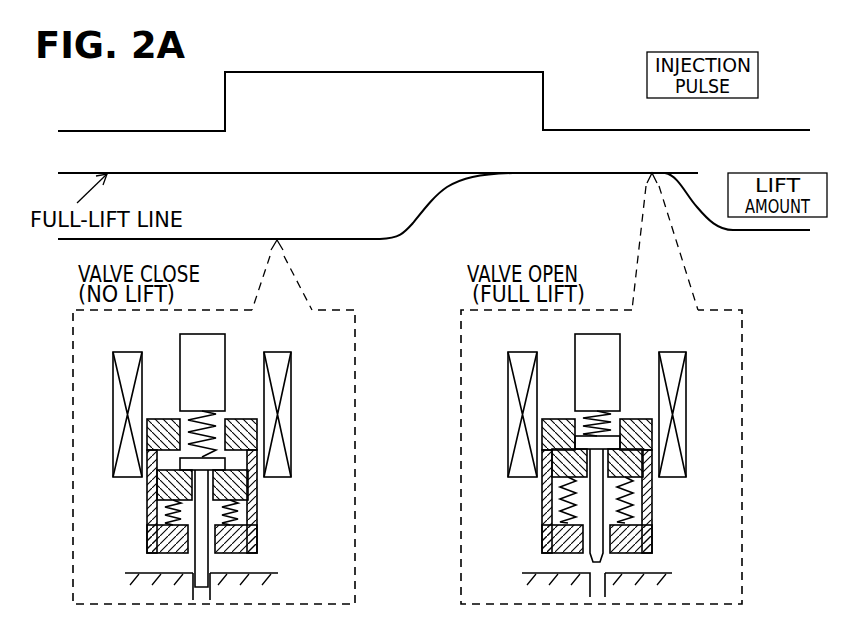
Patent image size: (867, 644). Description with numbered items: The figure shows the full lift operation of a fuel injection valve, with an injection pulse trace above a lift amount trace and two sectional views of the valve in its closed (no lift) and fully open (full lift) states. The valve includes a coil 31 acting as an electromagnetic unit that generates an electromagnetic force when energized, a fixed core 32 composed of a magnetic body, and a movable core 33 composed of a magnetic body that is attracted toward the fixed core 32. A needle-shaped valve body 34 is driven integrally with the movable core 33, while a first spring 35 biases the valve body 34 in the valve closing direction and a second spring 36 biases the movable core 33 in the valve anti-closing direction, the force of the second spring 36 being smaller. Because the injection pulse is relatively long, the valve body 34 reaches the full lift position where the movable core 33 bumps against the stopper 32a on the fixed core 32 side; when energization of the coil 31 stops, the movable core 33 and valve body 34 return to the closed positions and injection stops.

The coil 31 is at (291, 415).
The fixed core 32 is at (163, 419).
The stopper 32a is at (150, 470).
The movable core 33 is at (236, 496).
The valve body 34 is at (193, 565).
The first spring 35 is at (205, 425).
The second spring 36 is at (237, 512).